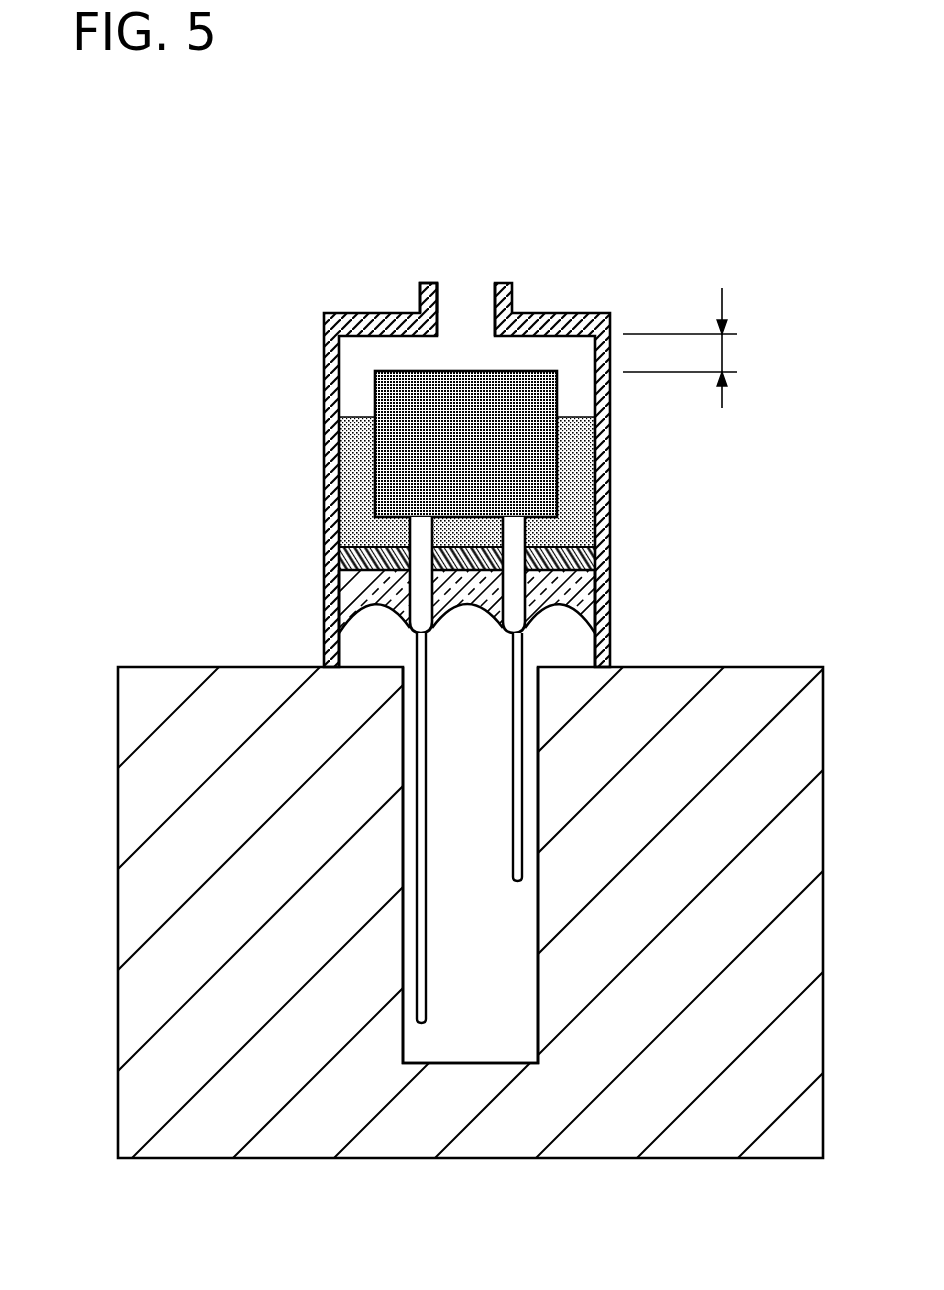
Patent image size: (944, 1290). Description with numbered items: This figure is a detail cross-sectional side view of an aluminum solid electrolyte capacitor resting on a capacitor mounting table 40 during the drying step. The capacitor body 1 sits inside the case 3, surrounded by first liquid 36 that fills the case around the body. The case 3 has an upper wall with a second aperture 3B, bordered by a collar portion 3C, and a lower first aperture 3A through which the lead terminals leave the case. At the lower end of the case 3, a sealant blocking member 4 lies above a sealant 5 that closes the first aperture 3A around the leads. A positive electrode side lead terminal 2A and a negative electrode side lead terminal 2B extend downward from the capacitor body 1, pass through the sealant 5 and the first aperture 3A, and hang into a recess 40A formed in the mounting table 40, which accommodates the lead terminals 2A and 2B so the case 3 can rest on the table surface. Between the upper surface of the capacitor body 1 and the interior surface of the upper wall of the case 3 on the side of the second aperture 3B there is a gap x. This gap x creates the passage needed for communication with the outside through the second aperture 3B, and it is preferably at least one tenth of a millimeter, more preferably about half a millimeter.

The capacitor body 1 is at (388, 402).
The positive electrode side lead terminal 2A is at (428, 870).
The negative electrode side lead terminal 2B is at (512, 750).
The case 3 is at (323, 322).
The first aperture 3A is at (355, 640).
The second aperture 3B is at (468, 288).
The collar portion 3C is at (420, 290).
The sealant blocking member 4 is at (348, 558).
The sealant 5 is at (338, 593).
The first liquid 36 is at (578, 482).
The mounting table 40 is at (132, 810).
The recess 40A is at (526, 678).
The gap x is at (728, 352).